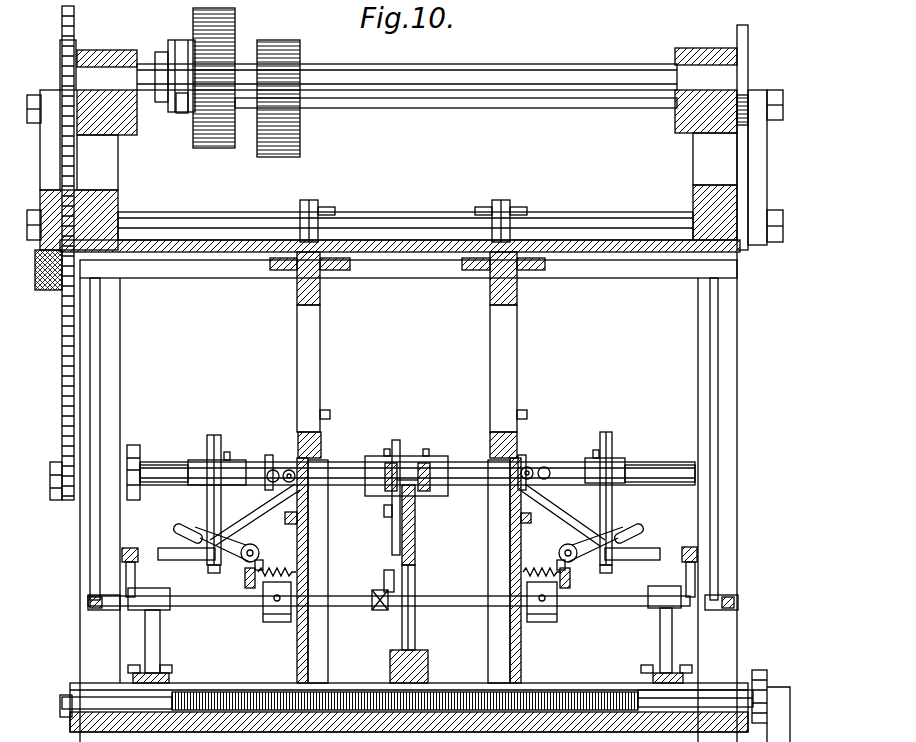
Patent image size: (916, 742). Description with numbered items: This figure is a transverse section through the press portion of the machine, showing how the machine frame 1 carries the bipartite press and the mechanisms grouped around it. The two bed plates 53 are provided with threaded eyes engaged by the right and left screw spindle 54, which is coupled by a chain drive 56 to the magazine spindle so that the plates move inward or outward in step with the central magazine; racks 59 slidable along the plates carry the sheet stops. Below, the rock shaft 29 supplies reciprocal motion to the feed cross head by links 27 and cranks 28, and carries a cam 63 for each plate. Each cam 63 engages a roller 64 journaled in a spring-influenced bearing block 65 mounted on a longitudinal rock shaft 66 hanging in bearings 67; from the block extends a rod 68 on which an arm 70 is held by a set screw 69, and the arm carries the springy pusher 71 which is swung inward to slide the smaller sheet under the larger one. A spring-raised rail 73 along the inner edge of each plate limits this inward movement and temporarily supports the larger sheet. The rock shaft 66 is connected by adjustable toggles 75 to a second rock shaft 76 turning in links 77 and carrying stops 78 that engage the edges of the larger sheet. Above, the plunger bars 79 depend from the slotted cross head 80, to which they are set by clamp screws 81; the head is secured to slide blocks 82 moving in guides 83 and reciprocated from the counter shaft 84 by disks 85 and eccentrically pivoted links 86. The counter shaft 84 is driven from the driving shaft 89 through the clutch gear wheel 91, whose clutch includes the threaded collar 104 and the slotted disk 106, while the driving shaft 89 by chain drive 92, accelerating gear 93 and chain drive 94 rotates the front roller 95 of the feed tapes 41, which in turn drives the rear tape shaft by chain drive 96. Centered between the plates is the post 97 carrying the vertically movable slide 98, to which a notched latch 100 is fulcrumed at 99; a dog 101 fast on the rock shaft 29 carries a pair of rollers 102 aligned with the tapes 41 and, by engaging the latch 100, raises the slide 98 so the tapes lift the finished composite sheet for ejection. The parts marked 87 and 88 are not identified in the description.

The machine frame 1 is at (118, 372).
The links 27 is at (130, 550).
The cranks 28 is at (132, 576).
The rock shaft 29 is at (200, 607).
The feed tapes 41 is at (228, 462).
The bed plates 53 is at (330, 648).
The right and left screw spindle 54 is at (596, 685).
The chain drive 56 is at (760, 675).
The racks 59 is at (320, 520).
The cam 63 is at (278, 622).
The roller 64 is at (250, 590).
The bearing block 65 is at (254, 566).
The rock shaft 66 is at (252, 550).
The bearings 67 is at (409, 550).
The rod 68 is at (178, 560).
The set screw 69 is at (625, 560).
The arm 70 is at (210, 502).
The pusher 71 is at (219, 437).
The rail 73 is at (366, 458).
The toggles 75 is at (246, 520).
The rock shaft 76 is at (546, 476).
The links 77 is at (277, 485).
The stops 78 is at (303, 438).
The plunger bars 79 is at (322, 455).
The cross head 80 is at (222, 238).
The clamp screws 81 is at (320, 205).
The slide blocks 82 is at (693, 197).
The guides 83 is at (497, 566).
The counter shaft 84 is at (497, 72).
The disks 85 is at (75, 40).
The links 86 is at (58, 98).
The rod 87 is at (90, 575).
The bearing 88 is at (98, 607).
The driving shaft 89 is at (553, 100).
The clutch gear wheel 91 is at (235, 22).
The chain drive 92 is at (62, 64).
The accelerating gear 93 is at (47, 288).
The chain drive 94 is at (62, 438).
The front roller 95 is at (167, 465).
The chain drive 96 is at (138, 445).
The post 97 is at (412, 578).
The slide 98 is at (416, 522).
The fulcrum 99 is at (388, 522).
The latch 100 is at (394, 582).
The dog 101 is at (376, 609).
The rollers 102 is at (423, 465).
The collar 104 is at (180, 114).
The disk 106 is at (184, 48).